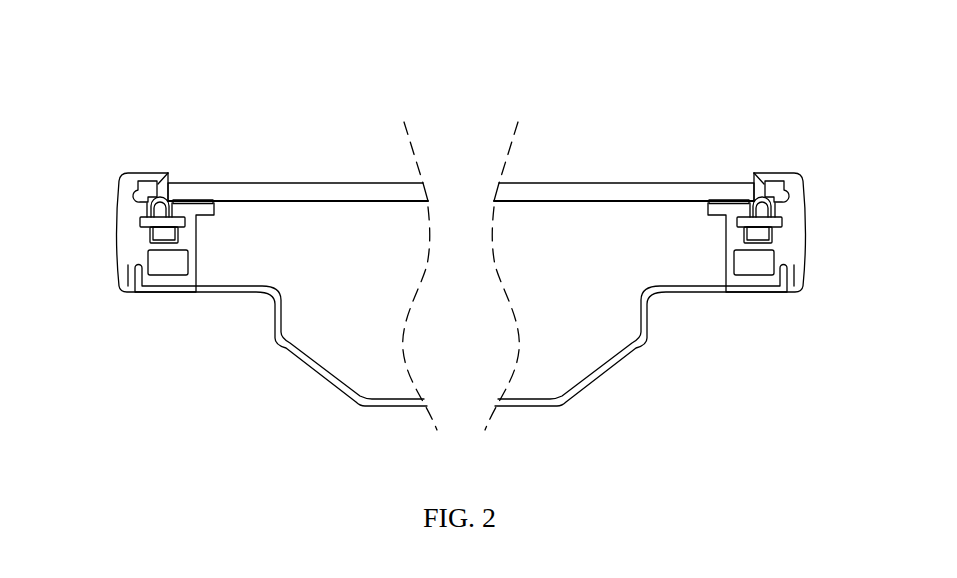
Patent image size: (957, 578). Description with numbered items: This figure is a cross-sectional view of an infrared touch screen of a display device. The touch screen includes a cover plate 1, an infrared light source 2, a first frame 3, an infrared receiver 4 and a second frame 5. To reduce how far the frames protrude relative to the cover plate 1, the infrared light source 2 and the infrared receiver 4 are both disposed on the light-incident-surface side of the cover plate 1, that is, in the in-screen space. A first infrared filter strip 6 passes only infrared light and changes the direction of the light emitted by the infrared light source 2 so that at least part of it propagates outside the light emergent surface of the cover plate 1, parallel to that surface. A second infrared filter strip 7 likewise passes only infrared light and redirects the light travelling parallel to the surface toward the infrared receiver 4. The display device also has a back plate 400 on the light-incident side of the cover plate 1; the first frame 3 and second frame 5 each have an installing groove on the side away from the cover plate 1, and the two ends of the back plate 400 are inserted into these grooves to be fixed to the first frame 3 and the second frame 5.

The cover plate 1 is at (291, 191).
The infrared light source 2 is at (165, 232).
The first frame 3 is at (130, 240).
The infrared receiver 4 is at (752, 228).
The second frame 5 is at (789, 247).
The first infrared filter strip 6 is at (160, 191).
The second infrared filter strip 7 is at (768, 188).
The back plate 400 is at (337, 382).